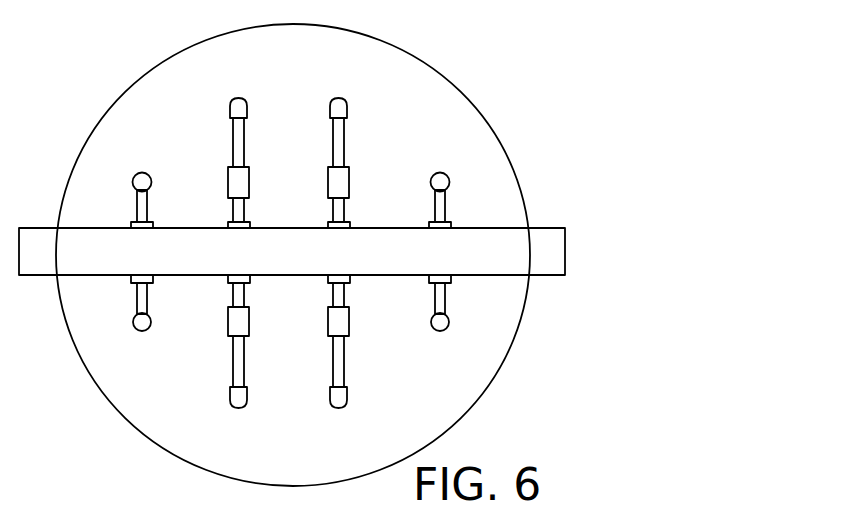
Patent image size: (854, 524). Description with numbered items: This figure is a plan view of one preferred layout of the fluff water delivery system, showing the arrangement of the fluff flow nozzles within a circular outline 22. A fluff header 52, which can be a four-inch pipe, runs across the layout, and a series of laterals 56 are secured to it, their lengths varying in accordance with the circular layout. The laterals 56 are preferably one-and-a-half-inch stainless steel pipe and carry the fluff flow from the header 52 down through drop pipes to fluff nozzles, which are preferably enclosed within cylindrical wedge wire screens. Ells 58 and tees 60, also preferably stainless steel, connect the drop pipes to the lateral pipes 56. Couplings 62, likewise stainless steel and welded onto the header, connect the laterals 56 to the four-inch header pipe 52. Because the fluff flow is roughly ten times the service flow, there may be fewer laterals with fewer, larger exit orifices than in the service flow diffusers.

The disc 22 is at (133, 85).
The fluff header 52 is at (483, 245).
The laterals 56 is at (246, 142).
The ells 58 is at (147, 180).
The tees 60 is at (249, 186).
The couplings 62 is at (350, 222).